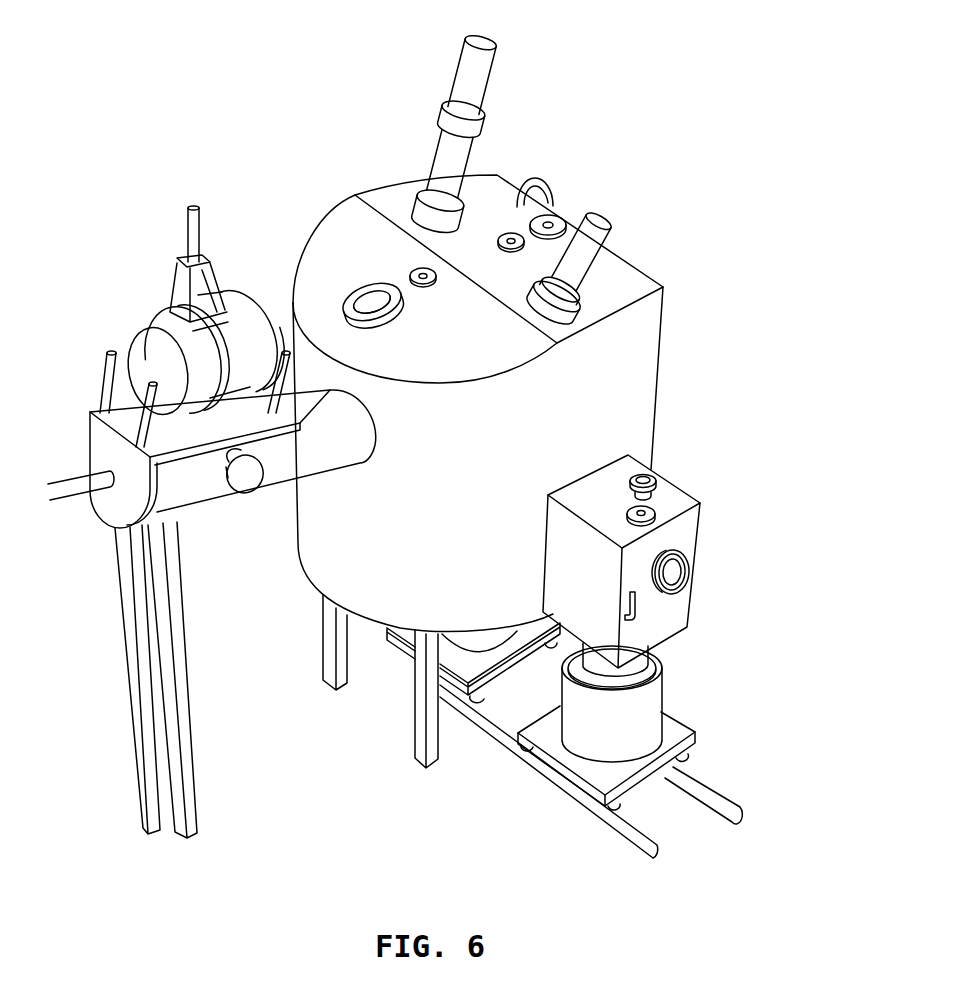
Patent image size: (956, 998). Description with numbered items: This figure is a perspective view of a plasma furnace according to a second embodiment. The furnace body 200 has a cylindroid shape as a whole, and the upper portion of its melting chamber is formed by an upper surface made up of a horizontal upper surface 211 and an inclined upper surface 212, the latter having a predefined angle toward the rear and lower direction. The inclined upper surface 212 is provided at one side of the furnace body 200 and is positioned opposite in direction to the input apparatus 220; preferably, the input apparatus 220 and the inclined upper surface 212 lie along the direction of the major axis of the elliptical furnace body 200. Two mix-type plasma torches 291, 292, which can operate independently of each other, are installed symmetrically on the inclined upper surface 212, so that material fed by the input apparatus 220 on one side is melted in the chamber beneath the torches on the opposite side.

The furnace body 200 is at (697, 358).
The horizontal upper surface 211 is at (314, 236).
The inclined upper surface 212 is at (393, 177).
The input apparatus 220 is at (205, 512).
The mix-type plasma torch 291 is at (587, 217).
The mix-type plasma torch 292 is at (497, 78).